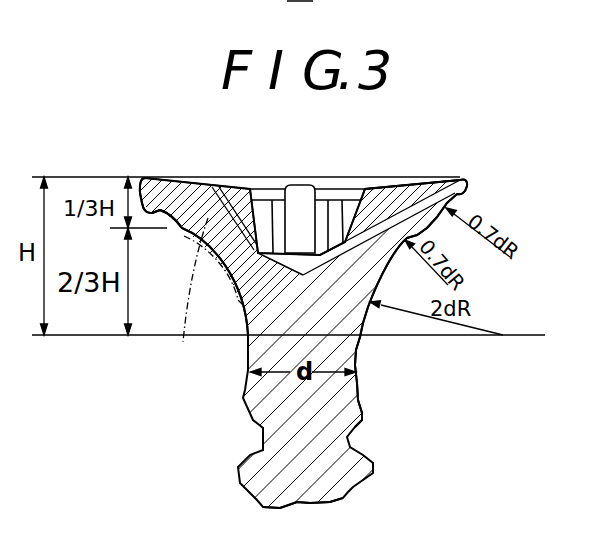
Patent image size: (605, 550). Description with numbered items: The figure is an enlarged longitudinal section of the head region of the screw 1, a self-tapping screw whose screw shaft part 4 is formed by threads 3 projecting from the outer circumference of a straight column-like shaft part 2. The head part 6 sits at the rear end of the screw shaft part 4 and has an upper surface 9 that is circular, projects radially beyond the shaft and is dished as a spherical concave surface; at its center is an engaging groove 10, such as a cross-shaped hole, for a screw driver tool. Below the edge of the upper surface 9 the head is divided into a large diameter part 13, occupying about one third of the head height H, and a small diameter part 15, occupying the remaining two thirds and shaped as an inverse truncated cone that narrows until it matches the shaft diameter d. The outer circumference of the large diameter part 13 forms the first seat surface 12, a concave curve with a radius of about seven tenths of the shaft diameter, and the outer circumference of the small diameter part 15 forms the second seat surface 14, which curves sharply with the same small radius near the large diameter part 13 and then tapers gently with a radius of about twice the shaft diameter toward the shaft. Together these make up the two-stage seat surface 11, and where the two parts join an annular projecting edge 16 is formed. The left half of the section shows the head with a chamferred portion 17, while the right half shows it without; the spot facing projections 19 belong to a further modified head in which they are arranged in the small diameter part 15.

The screw 1 is at (399, 488).
The shaft part 2 is at (372, 362).
The threads 3 is at (237, 472).
The screw shaft part 4 is at (373, 422).
The head part 6 is at (465, 166).
The upper surface 9 is at (400, 178).
The engaging groove 10 is at (360, 189).
The seat surface 11 is at (379, 318).
The first seat surface 12 is at (134, 178).
The large diameter part 13 is at (467, 194).
The second seat surface 14 is at (386, 270).
The small diameter part 15 is at (244, 312).
The annular projecting edge 16 is at (194, 242).
The chamferred portion 17 is at (250, 179).
The spot facing projections 19 is at (184, 340).